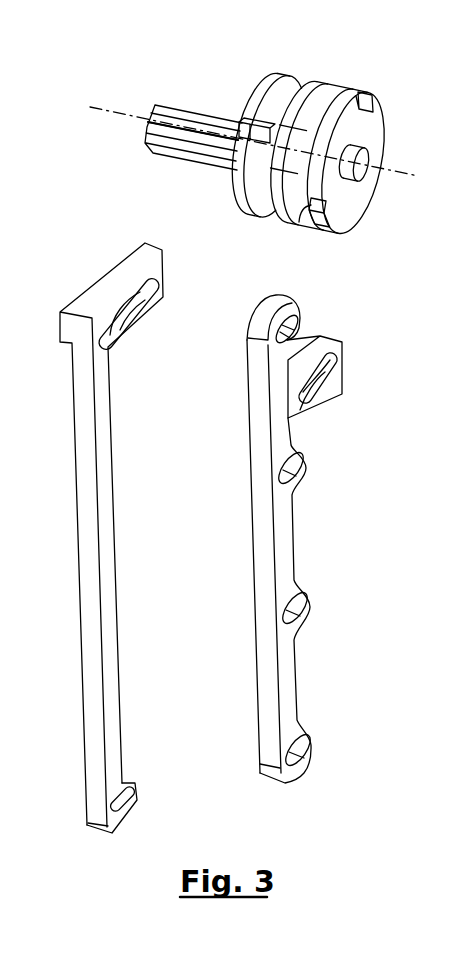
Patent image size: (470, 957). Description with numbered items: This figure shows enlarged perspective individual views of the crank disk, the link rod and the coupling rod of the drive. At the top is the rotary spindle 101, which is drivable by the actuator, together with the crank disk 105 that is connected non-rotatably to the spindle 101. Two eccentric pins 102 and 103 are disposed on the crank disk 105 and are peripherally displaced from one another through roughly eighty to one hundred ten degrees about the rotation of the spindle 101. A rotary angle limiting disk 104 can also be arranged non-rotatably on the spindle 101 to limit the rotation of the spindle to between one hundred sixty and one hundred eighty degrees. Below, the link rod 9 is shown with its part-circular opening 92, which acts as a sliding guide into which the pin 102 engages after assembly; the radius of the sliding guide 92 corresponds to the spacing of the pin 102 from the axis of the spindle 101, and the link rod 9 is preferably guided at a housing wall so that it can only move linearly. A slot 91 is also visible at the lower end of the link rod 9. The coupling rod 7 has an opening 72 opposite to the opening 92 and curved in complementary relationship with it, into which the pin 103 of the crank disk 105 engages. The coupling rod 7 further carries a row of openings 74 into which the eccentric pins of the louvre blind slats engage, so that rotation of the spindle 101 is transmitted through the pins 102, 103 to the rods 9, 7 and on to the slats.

The rotary spindle 101 is at (150, 136).
The eccentric pin 102 is at (247, 130).
The eccentric pin 103 is at (302, 228).
The rotary angle limiting disk 104 is at (372, 133).
The crank disk 105 is at (368, 83).
The link rod 9 is at (110, 538).
The lower slot 91 is at (132, 800).
The part-circular opening 92 is at (125, 297).
The coupling rod 7 is at (288, 539).
The opening 72 is at (322, 412).
The openings 74 is at (312, 738).